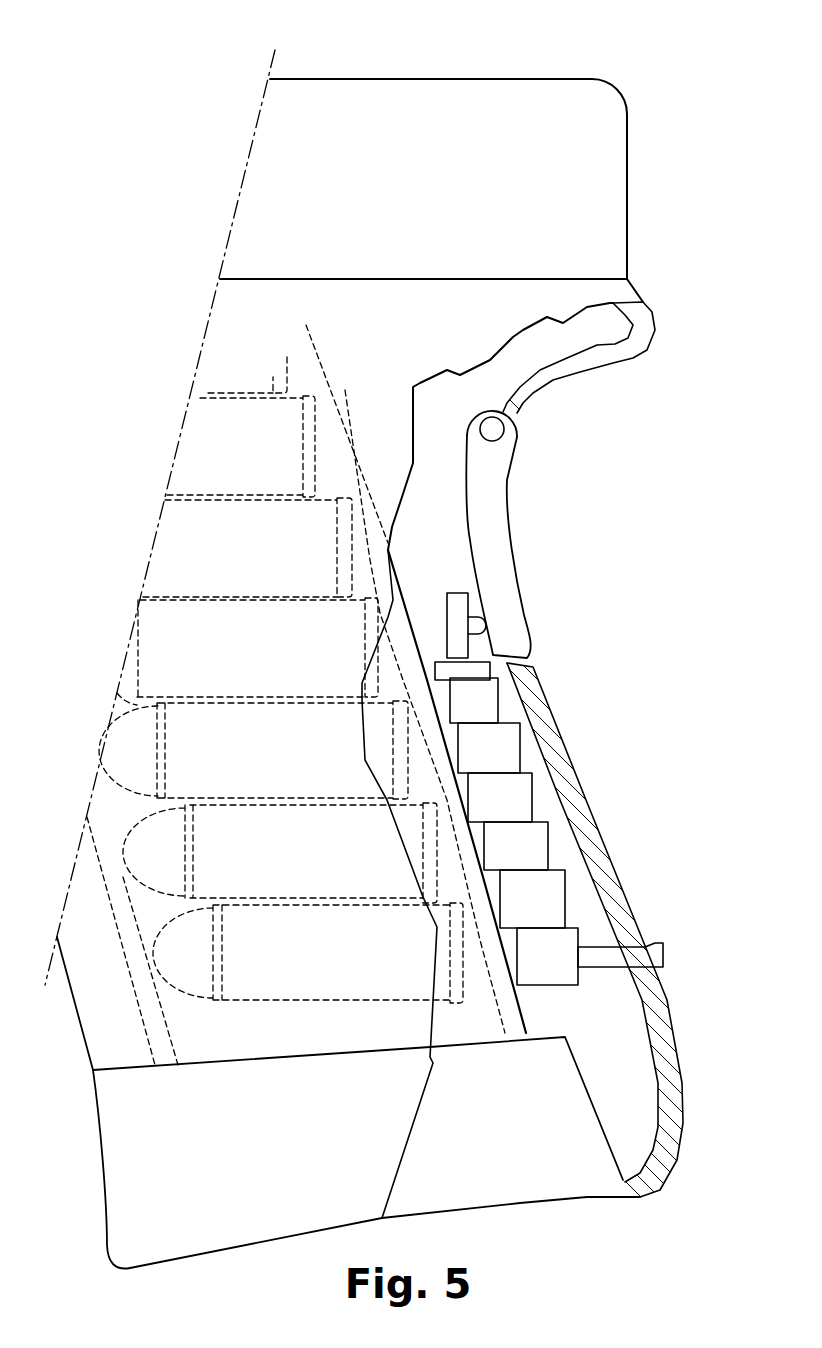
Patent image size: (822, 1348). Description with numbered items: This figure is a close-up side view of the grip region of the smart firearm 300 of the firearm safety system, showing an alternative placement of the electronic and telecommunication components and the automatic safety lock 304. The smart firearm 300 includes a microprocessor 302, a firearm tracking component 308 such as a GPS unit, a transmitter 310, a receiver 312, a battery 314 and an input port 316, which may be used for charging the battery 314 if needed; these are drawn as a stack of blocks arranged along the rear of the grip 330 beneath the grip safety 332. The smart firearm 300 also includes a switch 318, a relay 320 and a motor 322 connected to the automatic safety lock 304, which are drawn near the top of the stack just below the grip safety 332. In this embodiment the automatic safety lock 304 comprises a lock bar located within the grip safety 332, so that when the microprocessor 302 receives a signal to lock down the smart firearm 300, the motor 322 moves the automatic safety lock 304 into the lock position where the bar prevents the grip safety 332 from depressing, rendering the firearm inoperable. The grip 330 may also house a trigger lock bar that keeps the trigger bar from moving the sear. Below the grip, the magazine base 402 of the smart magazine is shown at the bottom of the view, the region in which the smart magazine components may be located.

The smart firearm component 300 is at (624, 76).
The grip 330 is at (443, 443).
The grip safety 332 is at (490, 498).
The motor 322 is at (458, 608).
The automatic safety lock 304 is at (481, 627).
The relay 320 is at (478, 668).
The switch 318 is at (492, 703).
The microprocessor 302 is at (503, 750).
The firearm tracking component 308 is at (518, 797).
The transmitter 310 is at (532, 850).
The receiver 312 is at (545, 897).
The battery 314 is at (567, 943).
The input port 316 is at (640, 957).
The magazine base 402 is at (533, 1140).